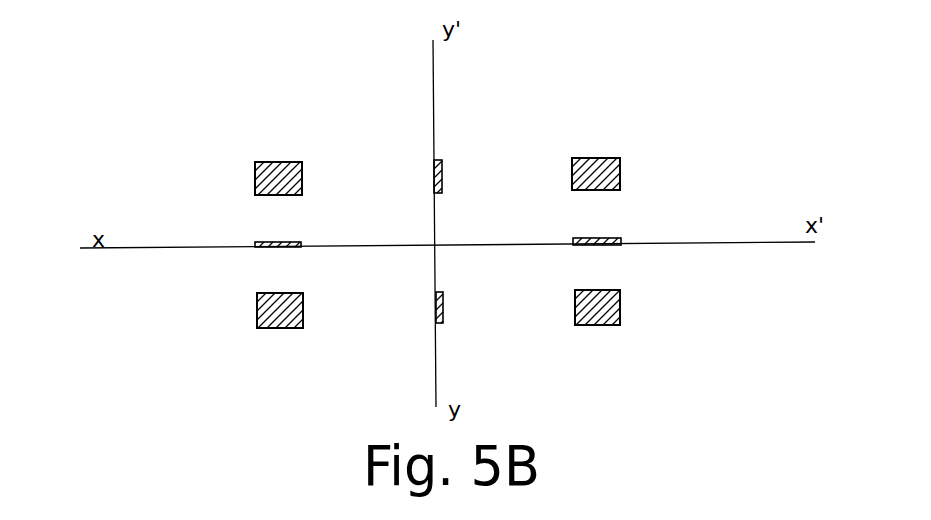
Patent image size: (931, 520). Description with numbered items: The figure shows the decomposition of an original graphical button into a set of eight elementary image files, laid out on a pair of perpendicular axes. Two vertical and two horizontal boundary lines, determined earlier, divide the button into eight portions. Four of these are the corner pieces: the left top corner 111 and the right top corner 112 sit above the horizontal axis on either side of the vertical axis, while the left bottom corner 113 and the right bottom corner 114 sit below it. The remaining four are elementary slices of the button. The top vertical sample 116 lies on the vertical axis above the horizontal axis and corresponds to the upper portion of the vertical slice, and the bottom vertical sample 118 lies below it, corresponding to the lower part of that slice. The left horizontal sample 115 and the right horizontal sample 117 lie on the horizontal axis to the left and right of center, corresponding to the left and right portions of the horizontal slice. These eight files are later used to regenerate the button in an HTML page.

The left top corner 111 is at (253, 162).
The right top corner 112 is at (618, 158).
The left bottom corner 113 is at (257, 328).
The right bottom corner 114 is at (620, 325).
The left horizontal sample 115 is at (255, 243).
The top vertical sample 116 is at (436, 159).
The right horizontal sample 117 is at (621, 245).
The bottom vertical sample 118 is at (444, 325).